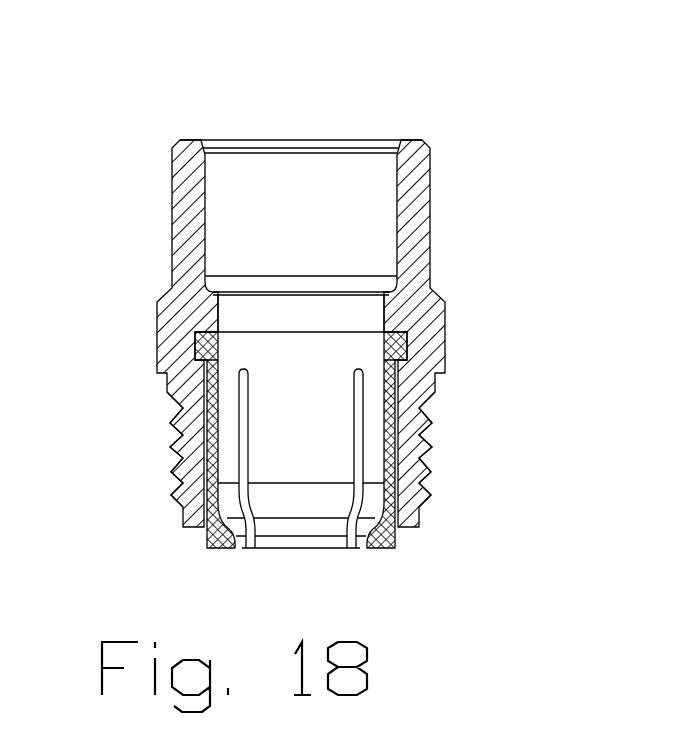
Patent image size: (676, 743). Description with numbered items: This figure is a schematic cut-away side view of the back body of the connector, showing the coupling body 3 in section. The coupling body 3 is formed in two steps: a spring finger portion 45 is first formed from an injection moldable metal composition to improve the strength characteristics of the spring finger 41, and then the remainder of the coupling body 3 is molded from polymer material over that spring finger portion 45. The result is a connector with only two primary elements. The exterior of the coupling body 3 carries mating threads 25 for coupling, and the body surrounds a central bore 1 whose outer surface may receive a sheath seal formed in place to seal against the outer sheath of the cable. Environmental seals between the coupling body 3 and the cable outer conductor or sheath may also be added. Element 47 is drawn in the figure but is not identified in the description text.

The bore 1 is at (303, 235).
The coupling body 3 is at (433, 222).
The mating threads 25 is at (427, 480).
The spring finger 41 is at (212, 452).
The spring finger portion 45 is at (403, 347).
The contact insert 47 is at (329, 553).